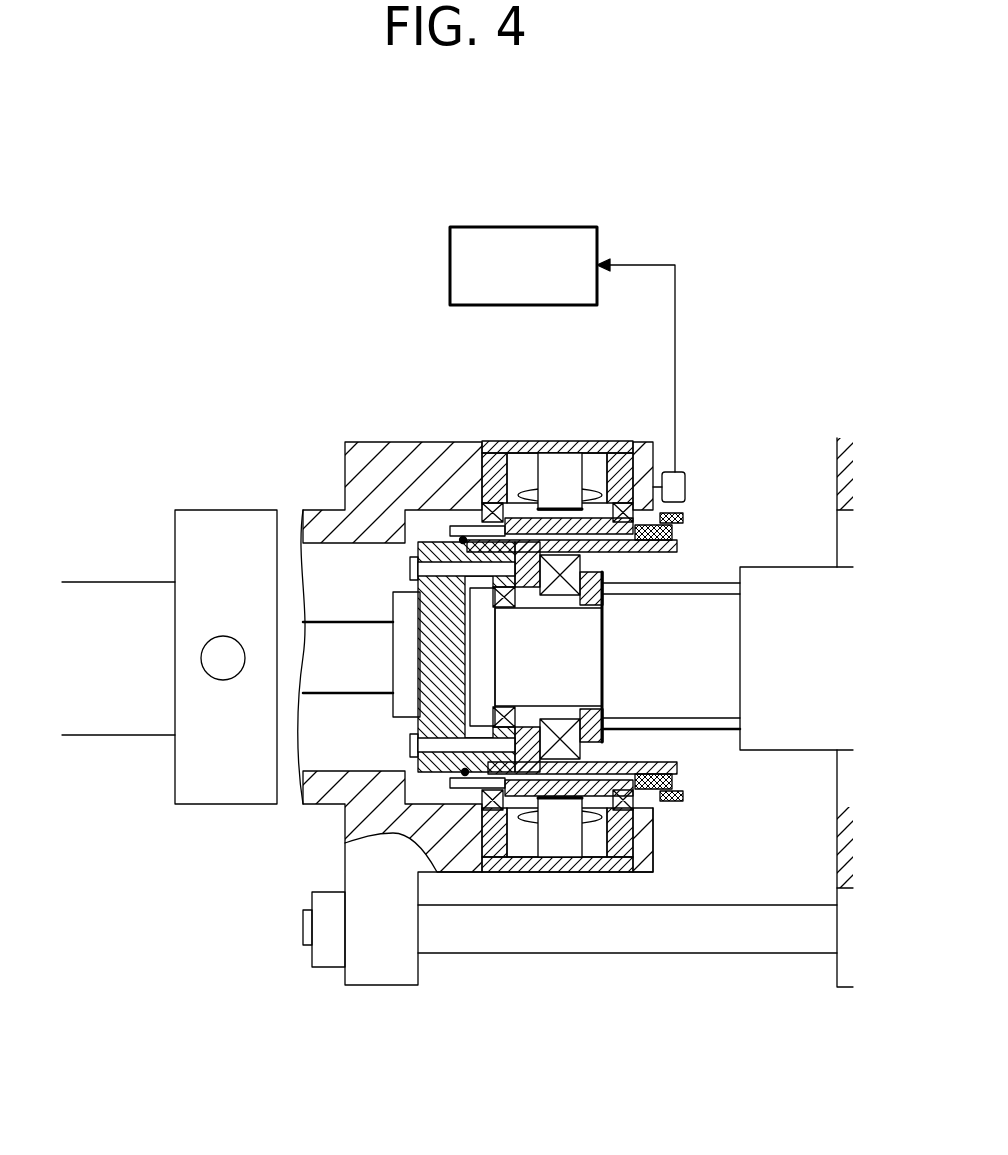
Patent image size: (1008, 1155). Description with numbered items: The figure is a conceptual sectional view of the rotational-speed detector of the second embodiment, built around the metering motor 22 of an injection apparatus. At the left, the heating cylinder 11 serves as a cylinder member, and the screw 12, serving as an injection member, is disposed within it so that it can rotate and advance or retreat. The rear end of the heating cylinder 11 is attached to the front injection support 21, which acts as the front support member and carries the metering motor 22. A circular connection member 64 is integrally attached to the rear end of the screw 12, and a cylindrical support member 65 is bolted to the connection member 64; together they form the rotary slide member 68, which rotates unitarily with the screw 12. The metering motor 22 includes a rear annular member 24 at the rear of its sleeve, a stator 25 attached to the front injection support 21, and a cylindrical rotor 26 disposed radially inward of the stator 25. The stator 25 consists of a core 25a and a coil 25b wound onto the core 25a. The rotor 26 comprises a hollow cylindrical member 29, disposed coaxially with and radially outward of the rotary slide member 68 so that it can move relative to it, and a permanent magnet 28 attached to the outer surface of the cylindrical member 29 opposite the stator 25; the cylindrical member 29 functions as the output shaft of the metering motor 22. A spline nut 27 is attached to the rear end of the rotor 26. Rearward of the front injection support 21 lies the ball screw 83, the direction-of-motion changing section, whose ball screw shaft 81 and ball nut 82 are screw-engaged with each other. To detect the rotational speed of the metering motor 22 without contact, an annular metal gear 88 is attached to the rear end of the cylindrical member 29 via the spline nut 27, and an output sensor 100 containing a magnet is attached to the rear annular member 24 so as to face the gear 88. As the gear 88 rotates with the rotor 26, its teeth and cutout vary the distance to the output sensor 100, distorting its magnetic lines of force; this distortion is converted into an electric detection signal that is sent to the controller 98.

The heating cylinder 11 is at (110, 600).
The screw 12 is at (332, 630).
The front injection support 21 is at (375, 455).
The metering motor 22 is at (570, 657).
The rear annular member 24 is at (660, 445).
The stator 25 is at (570, 416).
The core 25a is at (557, 442).
The coil 25b is at (608, 441).
The rotor 26 is at (557, 928).
The spline nut 27 is at (677, 548).
The permanent magnet 28 is at (552, 795).
The cylindrical member 29 is at (510, 795).
The connection member 64 is at (440, 668).
The support member 65 is at (440, 868).
The rotary slide member 68 is at (371, 721).
The ball screw shaft 81 is at (706, 720).
The ball nut 82 is at (796, 712).
The ball screw 83 is at (728, 712).
The gear 88 is at (683, 521).
The controller 98 is at (540, 226).
The output sensor 100 is at (685, 483).